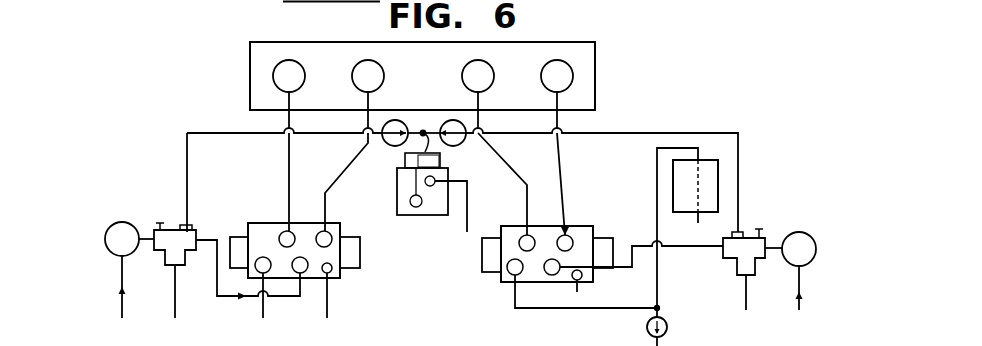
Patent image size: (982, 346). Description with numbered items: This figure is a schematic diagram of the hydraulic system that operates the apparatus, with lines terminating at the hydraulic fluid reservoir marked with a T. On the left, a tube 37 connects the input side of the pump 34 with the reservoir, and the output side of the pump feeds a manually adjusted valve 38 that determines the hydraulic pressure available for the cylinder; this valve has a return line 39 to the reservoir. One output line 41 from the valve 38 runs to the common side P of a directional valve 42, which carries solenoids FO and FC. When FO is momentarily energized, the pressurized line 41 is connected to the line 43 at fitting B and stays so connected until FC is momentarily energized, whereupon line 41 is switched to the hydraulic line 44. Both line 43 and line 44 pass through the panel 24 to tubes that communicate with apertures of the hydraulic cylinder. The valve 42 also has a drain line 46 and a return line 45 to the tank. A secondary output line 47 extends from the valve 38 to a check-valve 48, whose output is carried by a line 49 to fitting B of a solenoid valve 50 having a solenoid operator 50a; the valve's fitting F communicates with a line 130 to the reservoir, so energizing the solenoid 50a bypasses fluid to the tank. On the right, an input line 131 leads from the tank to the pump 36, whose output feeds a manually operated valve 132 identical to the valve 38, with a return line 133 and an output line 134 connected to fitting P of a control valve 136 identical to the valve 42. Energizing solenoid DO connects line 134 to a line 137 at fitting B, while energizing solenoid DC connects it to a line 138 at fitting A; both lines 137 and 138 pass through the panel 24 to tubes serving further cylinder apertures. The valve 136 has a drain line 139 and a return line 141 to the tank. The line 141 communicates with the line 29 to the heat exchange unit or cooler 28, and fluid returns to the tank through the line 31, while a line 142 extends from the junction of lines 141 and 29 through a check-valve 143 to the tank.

The panel 24 is at (250, 61).
The heat exchange unit or cooler 28 is at (718, 188).
The line to cooler 29 is at (655, 195).
The return line from cooler 31 is at (694, 216).
The pump 34 is at (118, 220).
The pump 36 is at (811, 238).
The tube 37 is at (120, 263).
The manually adjusted valve 38 is at (197, 233).
The return line 39 is at (174, 285).
The output line 41 is at (223, 299).
The directional valve 42 is at (265, 220).
The hydraulic line 43 is at (344, 175).
The hydraulic line 44 is at (290, 157).
The return line 45 is at (265, 314).
The drain line 46 is at (329, 306).
The secondary output line 47 is at (188, 160).
The check-valve 48 is at (388, 144).
The line 49 is at (434, 136).
The solenoid valve 50 is at (396, 200).
The solenoid operator 50a is at (403, 161).
The line 130 is at (468, 203).
The input line 131 is at (803, 287).
The manually operated valve 132 is at (766, 236).
The return line 133 is at (748, 287).
The output line 134 is at (688, 250).
The control valve 136 is at (577, 223).
The line 137 is at (562, 183).
The line 138 is at (502, 160).
The drain line 139 is at (580, 288).
The return line 141 is at (595, 312).
The line 142 is at (662, 317).
The check-valve 143 is at (668, 327).